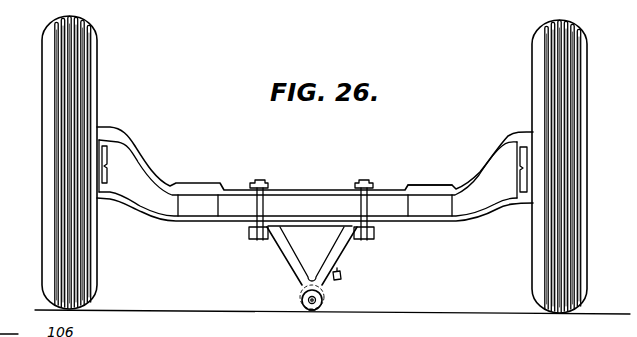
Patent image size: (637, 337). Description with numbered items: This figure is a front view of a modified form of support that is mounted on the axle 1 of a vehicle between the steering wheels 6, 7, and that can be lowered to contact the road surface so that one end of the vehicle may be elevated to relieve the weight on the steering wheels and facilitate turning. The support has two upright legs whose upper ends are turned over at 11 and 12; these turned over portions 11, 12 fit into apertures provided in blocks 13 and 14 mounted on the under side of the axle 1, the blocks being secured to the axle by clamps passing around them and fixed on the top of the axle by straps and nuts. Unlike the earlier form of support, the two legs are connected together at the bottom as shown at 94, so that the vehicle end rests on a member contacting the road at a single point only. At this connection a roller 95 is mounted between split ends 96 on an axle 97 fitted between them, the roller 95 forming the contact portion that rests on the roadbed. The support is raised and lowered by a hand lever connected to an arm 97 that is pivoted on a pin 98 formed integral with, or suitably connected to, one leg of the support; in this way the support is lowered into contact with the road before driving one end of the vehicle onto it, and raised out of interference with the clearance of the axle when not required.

The axle beam 1 is at (160, 196).
The left wheel 6 is at (93, 93).
The right wheel 7 is at (535, 80).
The turned over end of leg 11 is at (247, 233).
The turned over end of leg 12 is at (416, 200).
The block 13 is at (249, 240).
The block 14 is at (375, 236).
The connection of legs 94 is at (311, 281).
The roller 95 is at (312, 311).
The split ends 96 is at (323, 298).
The axle 97 is at (304, 301).
The pin 98 is at (342, 277).